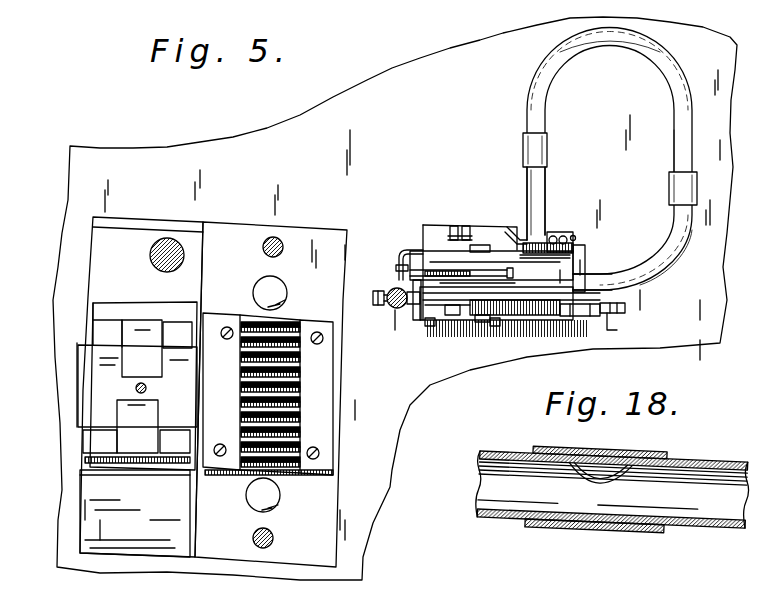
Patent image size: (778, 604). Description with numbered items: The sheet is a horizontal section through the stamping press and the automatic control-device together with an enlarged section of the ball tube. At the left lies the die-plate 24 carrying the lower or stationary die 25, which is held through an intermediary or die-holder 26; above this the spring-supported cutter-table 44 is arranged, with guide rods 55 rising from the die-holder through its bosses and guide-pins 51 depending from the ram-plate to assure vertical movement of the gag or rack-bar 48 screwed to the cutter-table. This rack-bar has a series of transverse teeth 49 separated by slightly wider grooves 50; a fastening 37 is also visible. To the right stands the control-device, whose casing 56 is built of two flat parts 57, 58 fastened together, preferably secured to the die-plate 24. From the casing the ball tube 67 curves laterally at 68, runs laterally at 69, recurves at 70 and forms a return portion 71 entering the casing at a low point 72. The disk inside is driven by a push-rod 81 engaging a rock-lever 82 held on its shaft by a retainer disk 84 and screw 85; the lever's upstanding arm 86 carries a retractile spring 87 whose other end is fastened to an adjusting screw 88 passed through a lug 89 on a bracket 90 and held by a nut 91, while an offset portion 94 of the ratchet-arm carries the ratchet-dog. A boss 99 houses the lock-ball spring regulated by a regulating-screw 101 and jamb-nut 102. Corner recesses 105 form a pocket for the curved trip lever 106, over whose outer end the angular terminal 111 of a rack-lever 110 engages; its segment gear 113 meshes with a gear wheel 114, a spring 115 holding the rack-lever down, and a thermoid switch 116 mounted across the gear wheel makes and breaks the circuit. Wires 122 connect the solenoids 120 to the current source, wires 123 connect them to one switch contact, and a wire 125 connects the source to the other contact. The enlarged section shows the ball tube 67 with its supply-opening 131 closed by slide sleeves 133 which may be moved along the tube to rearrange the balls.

In FIG. 5, the die-plate 24 is at (407, 400).
In FIG. 5, the die 25 is at (90, 373).
In FIG. 5, the intermediary 26 is at (92, 494).
In FIG. 5, the screw 37 is at (146, 388).
In FIG. 5, the cutter-table 44 is at (317, 495).
In FIG. 5, the gag or rack-bar 48 is at (230, 446).
In FIG. 5, the teeth 49 is at (298, 371).
In FIG. 5, the spaces or grooves 50 is at (300, 425).
In FIG. 5, the guide-pins 51 is at (265, 244).
In FIG. 5, the guide rods 55 is at (278, 293).
In FIG. 5, the casing 56 is at (578, 260).
In FIG. 5, the casing part 57 is at (430, 258).
In FIG. 5, the casing part 58 is at (430, 283).
In FIG. 5, the ball tube 67 is at (675, 218).
In FIG. 18, the ball tube 67 is at (503, 516).
In FIG. 5, the laterally curved portion 68 is at (670, 260).
In FIG. 5, the laterally directed portion 69 is at (660, 165).
In FIG. 5, the recurved portion 70 is at (623, 44).
In FIG. 5, the return portion 71 is at (533, 182).
In FIG. 5, the entry point 72 is at (520, 250).
In FIG. 5, the push-rod 81 is at (388, 307).
In FIG. 5, the rock-lever 82 is at (430, 323).
In FIG. 5, the retainer disk 84 is at (527, 317).
In FIG. 5, the screw 85 is at (493, 323).
In FIG. 5, the upstanding arm 86 is at (452, 310).
In FIG. 5, the retractile spring 87 is at (480, 320).
In FIG. 5, the adjusting screw 88 is at (593, 317).
In FIG. 5, the lug 89 is at (607, 317).
In FIG. 5, the bracket 90 is at (553, 300).
In FIG. 5, the nut 91 is at (613, 303).
In FIG. 5, the offset portion 94 is at (607, 287).
In FIG. 5, the boss 99 is at (450, 242).
In FIG. 5, the regulating-screw 101 is at (457, 242).
In FIG. 5, the jamb-nut 102 is at (452, 240).
In FIG. 5, the recess 105 is at (457, 275).
In FIG. 5, the trip lever 106 is at (402, 268).
In FIG. 5, the rack-lever 110 is at (477, 253).
In FIG. 5, the angular terminal 111 is at (405, 260).
In FIG. 5, the segment gear 113 is at (550, 277).
In FIG. 5, the gear wheel 114 is at (573, 247).
In FIG. 5, the spring 115 is at (500, 277).
In FIG. 5, the thermoid switch 116 is at (557, 230).
In FIG. 18, the solenoids 120 is at (475, 603).
In FIG. 18, the current-conducting wires 122 is at (535, 598).
In FIG. 5, the wires 123 is at (582, 213).
In FIG. 18, the wires 123 is at (590, 603).
In FIG. 5, the wire 125 is at (570, 205).
In FIG. 18, the supply-opening 131 is at (600, 478).
In FIG. 5, the slide sleeves 133 is at (533, 153).
In FIG. 18, the slide sleeves 133 is at (672, 527).